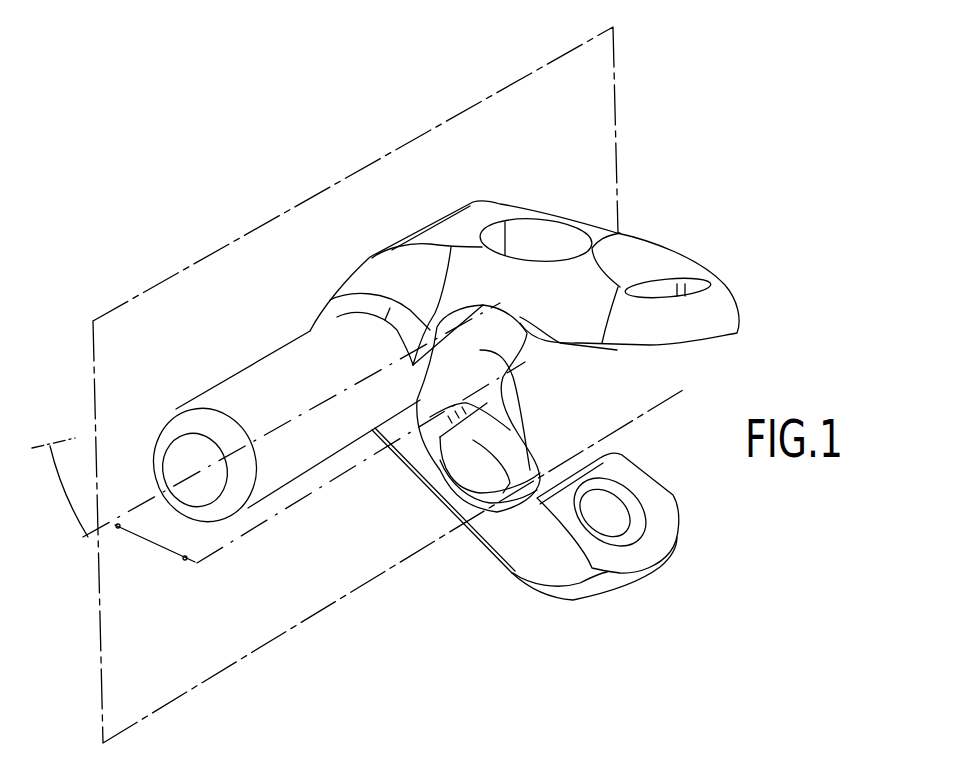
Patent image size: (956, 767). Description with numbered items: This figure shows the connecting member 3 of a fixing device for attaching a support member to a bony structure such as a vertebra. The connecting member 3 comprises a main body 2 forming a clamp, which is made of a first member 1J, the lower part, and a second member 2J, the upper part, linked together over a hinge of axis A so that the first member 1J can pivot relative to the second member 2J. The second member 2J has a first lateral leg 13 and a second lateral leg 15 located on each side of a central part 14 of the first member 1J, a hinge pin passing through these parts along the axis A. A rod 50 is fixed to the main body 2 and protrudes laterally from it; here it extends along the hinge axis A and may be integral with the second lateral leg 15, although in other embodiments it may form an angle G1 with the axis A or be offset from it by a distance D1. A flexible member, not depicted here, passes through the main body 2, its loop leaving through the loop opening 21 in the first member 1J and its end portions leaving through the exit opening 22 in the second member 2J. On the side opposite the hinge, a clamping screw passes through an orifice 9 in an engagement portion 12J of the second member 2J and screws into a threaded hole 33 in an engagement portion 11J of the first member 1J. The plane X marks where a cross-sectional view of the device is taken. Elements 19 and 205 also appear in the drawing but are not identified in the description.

The main body 2 is at (580, 243).
The second member 2J is at (568, 254).
The connecting member 3 is at (655, 186).
The orifice 9 is at (655, 280).
The engagement portion of the second member 12J is at (717, 316).
The first lateral leg 13 is at (530, 340).
The central part 14 is at (515, 393).
The second lateral leg 15 is at (408, 302).
The web plate edge 19 is at (428, 503).
The loop opening 21 is at (477, 557).
The exit opening 22 is at (528, 240).
The threaded hole 33 is at (602, 527).
The rod 50 is at (291, 420).
The first member 1J is at (606, 543).
The engagement portion of the first member 11J is at (603, 590).
The hinge axis A is at (140, 506).
The angle G1 is at (67, 493).
The distance D1 is at (145, 538).
The plane X- X is at (613, 27).
The sheet label 205 is at (522, 762).